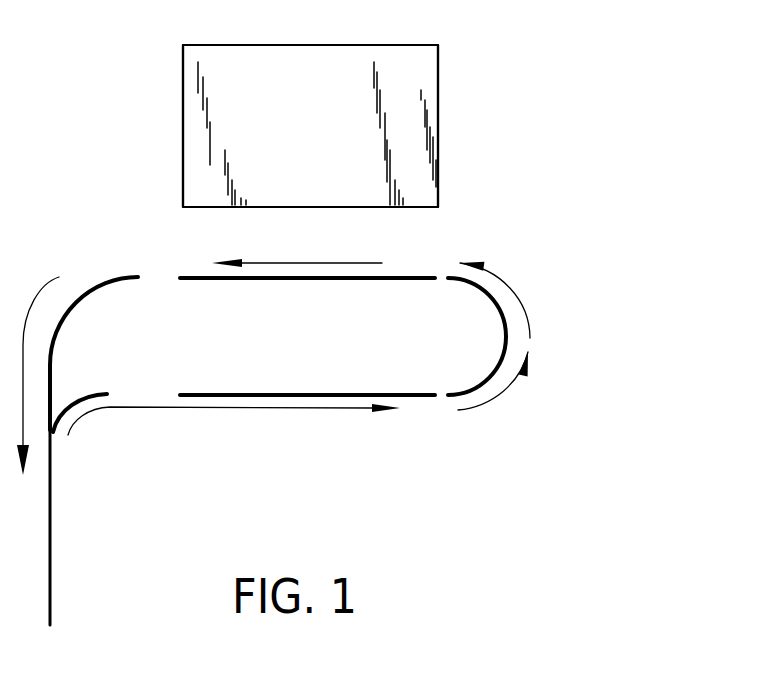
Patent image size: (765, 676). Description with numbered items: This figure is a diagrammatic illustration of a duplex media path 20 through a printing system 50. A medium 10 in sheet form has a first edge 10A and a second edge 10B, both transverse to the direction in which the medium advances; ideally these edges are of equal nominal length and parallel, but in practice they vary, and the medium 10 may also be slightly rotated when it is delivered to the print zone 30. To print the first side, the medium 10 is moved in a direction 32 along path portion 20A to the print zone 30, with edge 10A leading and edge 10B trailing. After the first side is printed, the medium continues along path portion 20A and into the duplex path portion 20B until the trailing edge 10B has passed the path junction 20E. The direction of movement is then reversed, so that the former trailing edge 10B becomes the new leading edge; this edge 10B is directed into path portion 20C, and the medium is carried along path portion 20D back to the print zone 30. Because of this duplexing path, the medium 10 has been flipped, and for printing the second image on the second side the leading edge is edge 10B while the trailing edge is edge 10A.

The medium 10 is at (423, 77).
The first edge 10A is at (183, 118).
The second edge 10B is at (438, 152).
The duplex media path 20 is at (558, 271).
The path portion 20A is at (65, 320).
The duplex path portion 20B is at (53, 547).
The path portion 20C is at (318, 393).
The path portion 20D is at (502, 318).
The path junction 20E is at (53, 428).
The print zone 30 is at (323, 248).
The direction 32 is at (257, 262).
The printing system 50 is at (39, 223).